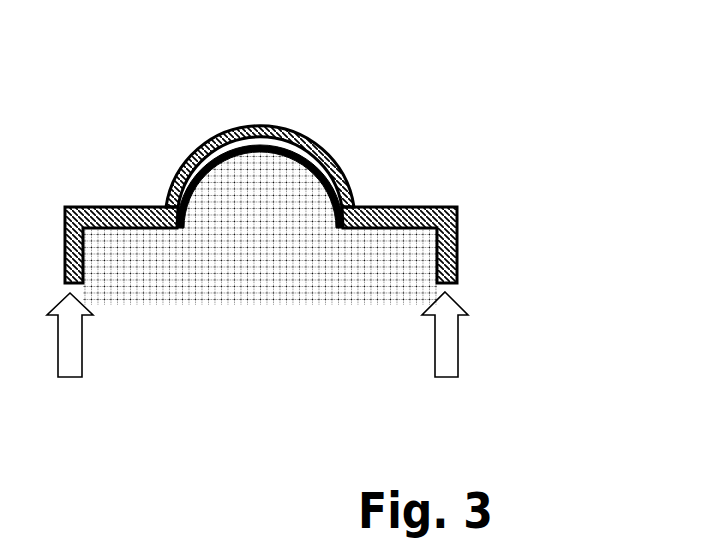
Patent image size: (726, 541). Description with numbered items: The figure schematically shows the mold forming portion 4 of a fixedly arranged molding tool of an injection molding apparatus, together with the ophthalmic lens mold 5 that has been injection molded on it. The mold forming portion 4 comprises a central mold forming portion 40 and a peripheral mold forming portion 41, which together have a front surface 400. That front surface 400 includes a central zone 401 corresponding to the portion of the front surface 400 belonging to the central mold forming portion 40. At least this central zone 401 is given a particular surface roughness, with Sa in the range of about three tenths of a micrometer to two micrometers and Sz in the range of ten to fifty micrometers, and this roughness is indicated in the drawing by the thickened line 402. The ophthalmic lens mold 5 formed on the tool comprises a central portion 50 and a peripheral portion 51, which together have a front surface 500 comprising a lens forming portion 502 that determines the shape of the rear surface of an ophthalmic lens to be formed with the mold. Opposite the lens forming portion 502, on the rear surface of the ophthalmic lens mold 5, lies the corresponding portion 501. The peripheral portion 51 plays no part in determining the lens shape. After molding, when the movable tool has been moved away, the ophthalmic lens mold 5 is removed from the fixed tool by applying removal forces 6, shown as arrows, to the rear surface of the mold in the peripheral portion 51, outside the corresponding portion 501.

The mold forming portion 4 is at (260, 316).
The central mold forming portion 40 is at (252, 175).
The front surface 400 is at (103, 228).
The central zone 401 is at (265, 145).
The thickened line 402 is at (218, 165).
The peripheral mold forming portion 41 is at (127, 248).
The ophthalmic lens mold 5 is at (313, 141).
The central portion 50 is at (253, 141).
The front surface 500 is at (157, 211).
The corresponding portion 501 is at (291, 138).
The lens forming portion 502 is at (197, 146).
The peripheral portion 51 is at (123, 214).
The removal forces 6 is at (70, 355).